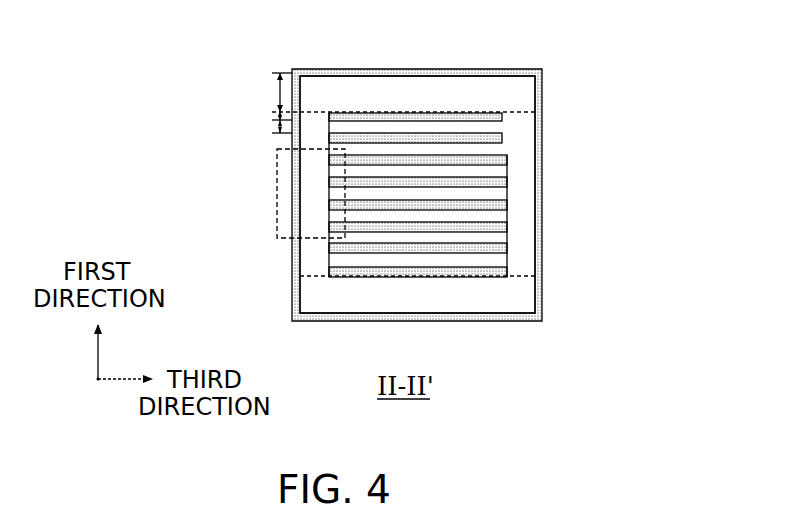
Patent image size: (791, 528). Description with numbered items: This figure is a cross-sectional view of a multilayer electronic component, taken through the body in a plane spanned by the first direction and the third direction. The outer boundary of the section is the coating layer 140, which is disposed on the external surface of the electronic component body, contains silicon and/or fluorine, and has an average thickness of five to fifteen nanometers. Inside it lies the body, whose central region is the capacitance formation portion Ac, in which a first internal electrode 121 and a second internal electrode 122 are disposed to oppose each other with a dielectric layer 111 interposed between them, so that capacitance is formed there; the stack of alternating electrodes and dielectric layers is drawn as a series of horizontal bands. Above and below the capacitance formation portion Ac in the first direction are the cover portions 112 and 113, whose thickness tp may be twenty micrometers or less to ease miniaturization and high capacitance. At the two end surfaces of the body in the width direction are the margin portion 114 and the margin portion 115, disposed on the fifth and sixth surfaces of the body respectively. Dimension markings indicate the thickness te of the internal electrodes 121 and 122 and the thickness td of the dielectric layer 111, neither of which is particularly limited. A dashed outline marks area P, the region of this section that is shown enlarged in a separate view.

The coating layer 140 is at (330, 72).
The cover portion 112 is at (426, 90).
The dielectric layer 111 is at (505, 127).
The first internal electrode 121 is at (502, 115).
The second internal electrode 122 is at (505, 135).
The margin portion 115 is at (530, 220).
The cover portion 113 is at (530, 296).
The margin portion 114 is at (312, 220).
The capacitance formation portion Ac is at (321, 197).
The area P is at (318, 238).
The thickness of the cover portions tp is at (273, 92).
The thickness of the internal electrodes te is at (272, 112).
The thickness of the dielectric layer td is at (275, 133).